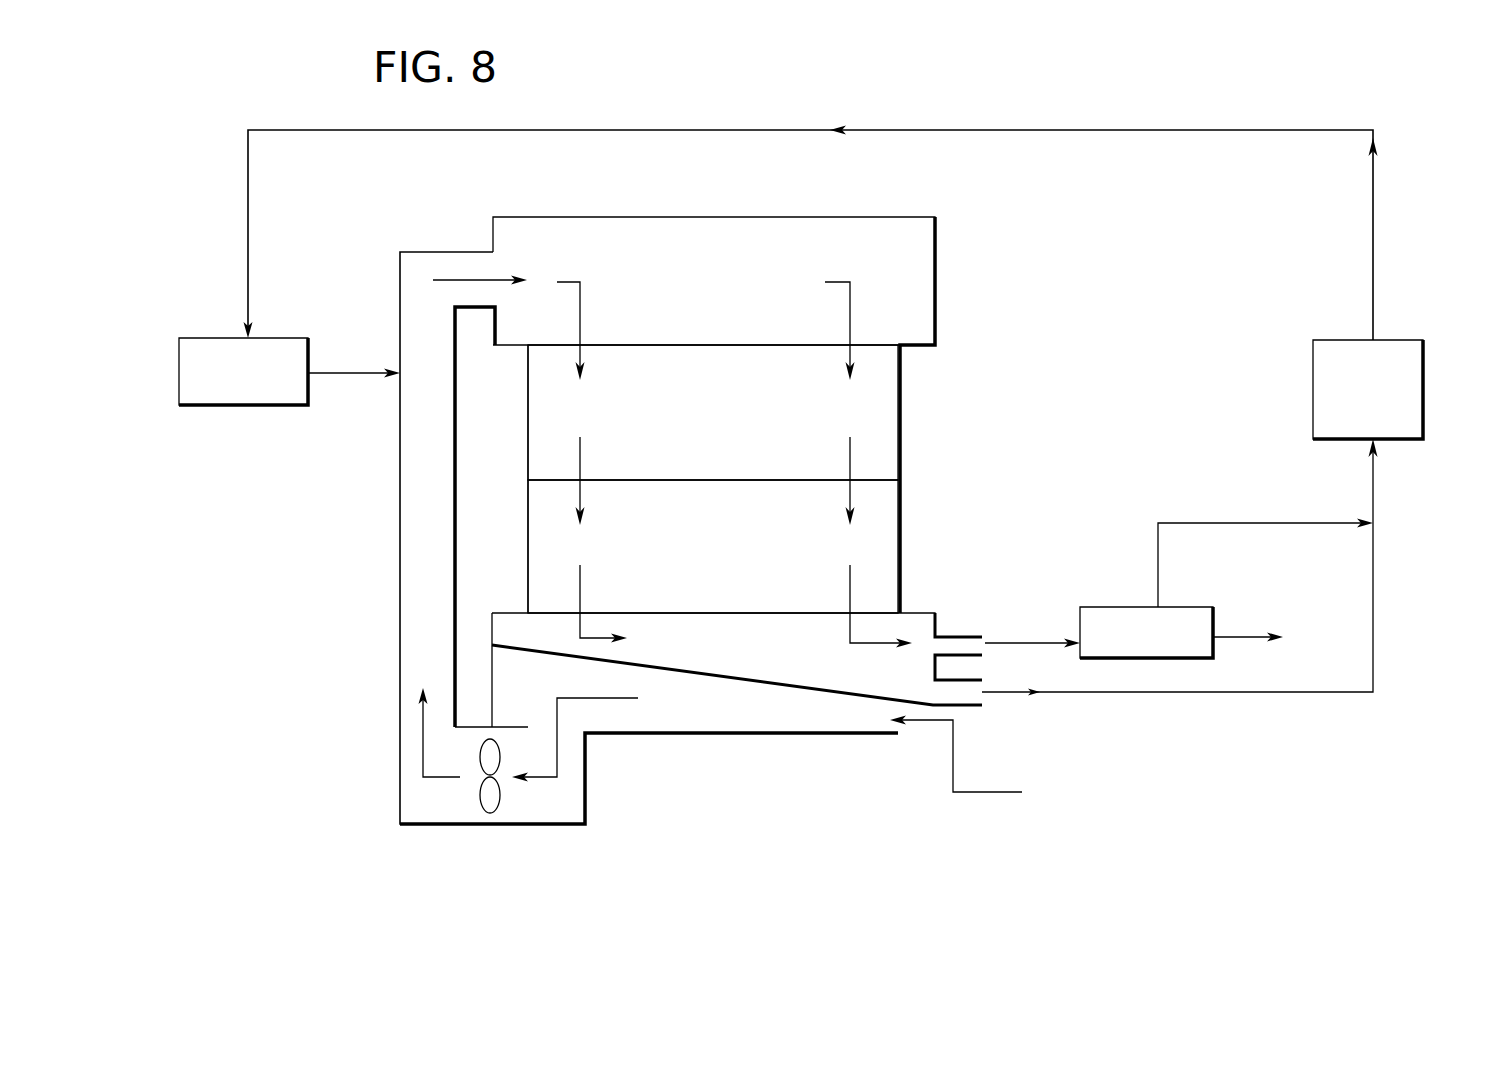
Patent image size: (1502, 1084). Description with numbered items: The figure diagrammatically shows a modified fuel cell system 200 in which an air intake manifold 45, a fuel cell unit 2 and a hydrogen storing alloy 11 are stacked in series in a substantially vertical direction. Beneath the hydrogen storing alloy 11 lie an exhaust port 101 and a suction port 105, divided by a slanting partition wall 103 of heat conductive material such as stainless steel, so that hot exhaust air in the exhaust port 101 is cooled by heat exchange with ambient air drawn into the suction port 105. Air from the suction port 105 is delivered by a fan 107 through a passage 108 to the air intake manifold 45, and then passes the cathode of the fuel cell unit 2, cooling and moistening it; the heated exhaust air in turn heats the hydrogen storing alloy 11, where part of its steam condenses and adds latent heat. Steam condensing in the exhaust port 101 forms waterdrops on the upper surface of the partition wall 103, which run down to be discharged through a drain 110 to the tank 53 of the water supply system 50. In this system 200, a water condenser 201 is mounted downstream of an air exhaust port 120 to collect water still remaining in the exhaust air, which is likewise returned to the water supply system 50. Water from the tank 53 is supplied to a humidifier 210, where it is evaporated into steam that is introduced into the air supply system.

The fuel cell system 200 is at (206, 192).
The humidifier 210 is at (246, 405).
The passage 108 is at (398, 548).
The air intake manifold 45 is at (938, 285).
The fuel cell unit 2 is at (900, 412).
The hydrogen storing alloy 11 is at (900, 550).
The air exhaust port 120 is at (965, 637).
The drain 110 is at (982, 707).
The exhaust port 101 is at (840, 673).
The partition wall 103 is at (755, 682).
The suction port 105 is at (672, 708).
The fan 107 is at (485, 825).
The water condenser 201 is at (1113, 608).
The water supply system 50 is at (1412, 538).
The tank 53 is at (1385, 340).